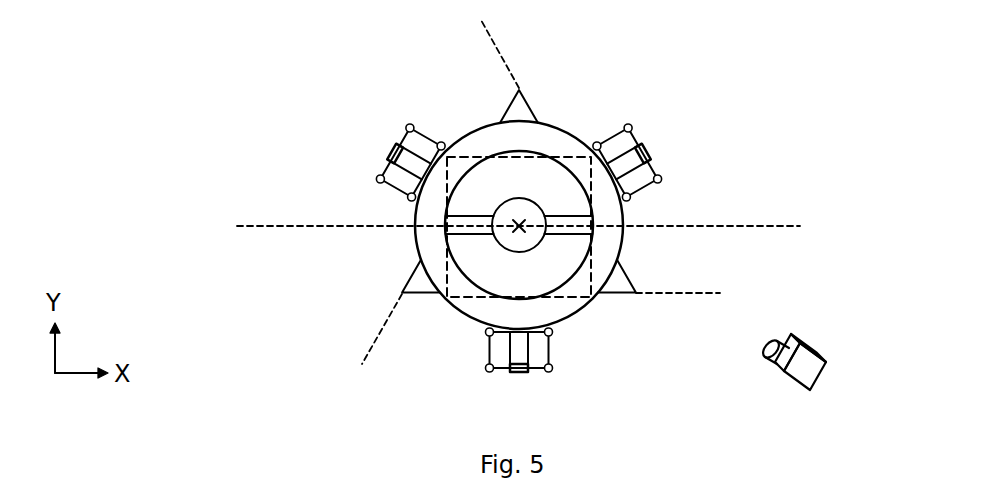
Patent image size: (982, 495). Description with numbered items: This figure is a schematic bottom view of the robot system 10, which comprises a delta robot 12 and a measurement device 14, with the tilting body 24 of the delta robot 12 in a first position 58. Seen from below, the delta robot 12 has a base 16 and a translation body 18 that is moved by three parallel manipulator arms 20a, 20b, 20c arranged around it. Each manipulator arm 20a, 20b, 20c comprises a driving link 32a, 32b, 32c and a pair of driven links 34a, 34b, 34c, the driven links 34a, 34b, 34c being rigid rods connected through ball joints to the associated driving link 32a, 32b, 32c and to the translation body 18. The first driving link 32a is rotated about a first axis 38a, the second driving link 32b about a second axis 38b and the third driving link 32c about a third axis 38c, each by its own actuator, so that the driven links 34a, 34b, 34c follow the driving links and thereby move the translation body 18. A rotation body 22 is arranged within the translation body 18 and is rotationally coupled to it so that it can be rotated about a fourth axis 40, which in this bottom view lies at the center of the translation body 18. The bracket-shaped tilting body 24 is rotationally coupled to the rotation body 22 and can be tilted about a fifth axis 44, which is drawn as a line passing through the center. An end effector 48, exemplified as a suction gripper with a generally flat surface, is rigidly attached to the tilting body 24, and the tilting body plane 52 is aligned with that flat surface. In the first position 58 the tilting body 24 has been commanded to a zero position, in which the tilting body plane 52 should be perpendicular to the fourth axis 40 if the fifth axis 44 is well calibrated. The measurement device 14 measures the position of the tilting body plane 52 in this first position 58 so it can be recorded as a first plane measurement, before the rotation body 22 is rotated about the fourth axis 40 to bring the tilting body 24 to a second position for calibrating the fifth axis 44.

The robot system 10 is at (244, 63).
The delta robot 12 is at (332, 78).
The measurement device 14 is at (800, 368).
The base 16 is at (620, 288).
The translation body 18 is at (613, 245).
The manipulator arm 20a is at (364, 142).
The manipulator arm 20b is at (590, 372).
The manipulator arm 20c is at (678, 140).
The rotation body 22 is at (493, 287).
The tilting body 24 is at (460, 226).
The driving link 32a is at (392, 165).
The driving link 32b is at (520, 354).
The driving link 32c is at (646, 161).
The driven links 34a is at (407, 126).
The driven links 34b is at (488, 350).
The driven links 34c is at (631, 126).
The first axis 38a is at (368, 347).
The second axis 38b is at (725, 278).
The third axis 38c is at (515, 46).
The fourth axis 40 is at (522, 222).
The fifth axis 44 is at (262, 226).
The end effector 48 is at (501, 241).
The tilting body plane 52 is at (580, 166).
The first position 58 is at (793, 157).